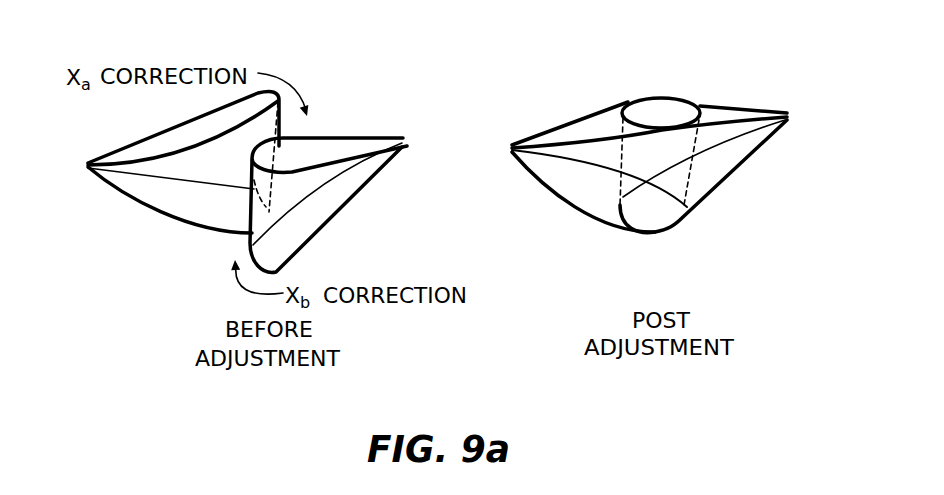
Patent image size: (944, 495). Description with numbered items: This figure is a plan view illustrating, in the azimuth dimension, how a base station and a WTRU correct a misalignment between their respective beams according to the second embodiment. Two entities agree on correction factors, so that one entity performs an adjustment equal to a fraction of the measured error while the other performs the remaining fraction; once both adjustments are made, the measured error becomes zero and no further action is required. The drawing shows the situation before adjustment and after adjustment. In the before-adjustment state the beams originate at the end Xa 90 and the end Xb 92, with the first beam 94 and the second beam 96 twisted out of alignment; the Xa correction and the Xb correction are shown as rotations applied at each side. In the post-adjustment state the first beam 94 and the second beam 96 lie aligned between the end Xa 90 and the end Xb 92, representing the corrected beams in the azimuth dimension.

The first end Xa of blade 90 is at (53, 178).
The second end Xb of blade 92 is at (418, 121).
The first wing section 94 is at (153, 207).
The second wing section 96 is at (346, 136).